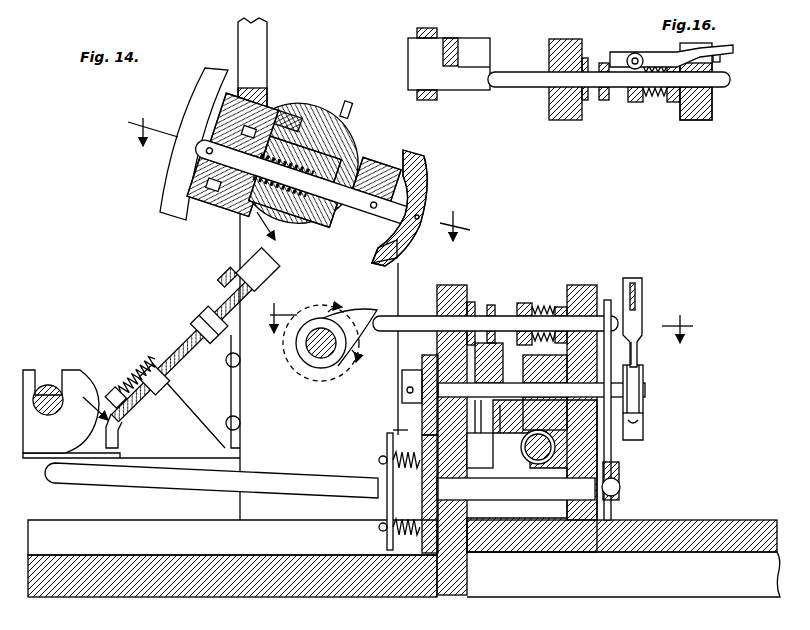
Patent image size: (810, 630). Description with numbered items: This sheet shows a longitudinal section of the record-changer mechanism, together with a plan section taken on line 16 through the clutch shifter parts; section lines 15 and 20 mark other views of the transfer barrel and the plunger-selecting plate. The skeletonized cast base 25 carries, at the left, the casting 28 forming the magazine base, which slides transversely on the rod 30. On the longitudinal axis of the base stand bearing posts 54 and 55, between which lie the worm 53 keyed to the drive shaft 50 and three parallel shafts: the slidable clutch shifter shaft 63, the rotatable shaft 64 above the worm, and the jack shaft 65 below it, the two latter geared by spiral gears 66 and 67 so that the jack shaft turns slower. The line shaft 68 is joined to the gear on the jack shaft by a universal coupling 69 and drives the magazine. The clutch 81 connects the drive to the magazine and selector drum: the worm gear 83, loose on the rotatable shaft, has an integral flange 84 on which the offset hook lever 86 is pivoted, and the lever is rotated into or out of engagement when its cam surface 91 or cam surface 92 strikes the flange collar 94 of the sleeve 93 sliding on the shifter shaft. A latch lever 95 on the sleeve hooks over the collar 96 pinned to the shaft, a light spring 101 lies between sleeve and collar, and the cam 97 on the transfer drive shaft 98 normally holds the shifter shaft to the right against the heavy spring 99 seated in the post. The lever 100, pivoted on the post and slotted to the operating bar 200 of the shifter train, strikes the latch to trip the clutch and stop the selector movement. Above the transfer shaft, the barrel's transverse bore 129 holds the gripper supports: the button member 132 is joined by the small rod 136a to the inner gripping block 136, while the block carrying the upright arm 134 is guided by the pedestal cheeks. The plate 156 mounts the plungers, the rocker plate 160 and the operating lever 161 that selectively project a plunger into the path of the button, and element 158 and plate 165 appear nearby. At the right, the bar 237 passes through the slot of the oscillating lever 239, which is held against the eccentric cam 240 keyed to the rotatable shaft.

In FIG. 14, the section line 15 is at (300, 172).
In FIG. 14, the section line 16 is at (485, 323).
In FIG. 14, the section line 20 is at (165, 315).
In FIG. 14, the base 25 is at (243, 597).
In FIG. 14, the casting 28 is at (78, 371).
In FIG. 14, the rod 30 is at (46, 385).
In FIG. 14, the drive shaft 50 is at (532, 476).
In FIG. 14, the worm 53 is at (540, 462).
In FIG. 14, the bearing post 54 is at (590, 285).
In FIG. 16, the bearing post 54 is at (710, 120).
In FIG. 14, the bearing post 55 is at (460, 285).
In FIG. 16, the bearing post 55 is at (567, 40).
In FIG. 14, the clutch shifter shaft 63 is at (411, 316).
In FIG. 16, the clutch shifter shaft 63 is at (514, 72).
In FIG. 14, the rotatable shaft 64 is at (422, 413).
In FIG. 14, the selector and magazine drive jack shaft 65 is at (505, 490).
In FIG. 14, the spiral gear 66 is at (422, 545).
In FIG. 14, the spiral gear 67 is at (412, 370).
In FIG. 14, the line shaft 68 is at (296, 477).
In FIG. 14, the universal coupling 69 is at (387, 545).
In FIG. 14, the clutch 81 is at (510, 272).
In FIG. 14, the worm gear 83 is at (600, 427).
In FIG. 14, the flange 84 is at (421, 425).
In FIG. 14, the hook lever 86 is at (482, 432).
In FIG. 14, the cam surface 91 is at (476, 356).
In FIG. 14, the cam surface 92 is at (472, 433).
In FIG. 14, the sleeve 93 is at (524, 303).
In FIG. 16, the sleeve 93 is at (635, 102).
In FIG. 14, the flange collar 94 is at (491, 305).
In FIG. 16, the flange collar 94 is at (604, 100).
In FIG. 16, the latch lever 95 is at (662, 52).
In FIG. 14, the collar 96 is at (561, 325).
In FIG. 16, the collar 96 is at (674, 102).
In FIG. 14, the cam 97 is at (377, 310).
In FIG. 16, the cam 97 is at (476, 90).
In FIG. 14, the transfer drive shaft 98 is at (318, 360).
In FIG. 16, the transfer drive shaft 98 is at (443, 32).
In FIG. 14, the spring 99 is at (580, 290).
In FIG. 16, the spring 99 is at (708, 100).
In FIG. 14, the lever 100 is at (636, 330).
In FIG. 14, the spring 101 is at (542, 305).
In FIG. 16, the spring 101 is at (652, 100).
In FIG. 14, the transverse bore 129 is at (270, 125).
In FIG. 14, the button member 132 is at (428, 168).
In FIG. 14, the arm 134 is at (262, 47).
In FIG. 14, the inner record gripping block 136 is at (166, 197).
In FIG. 14, the rod 136a is at (418, 212).
In FIG. 14, the plate 156 is at (203, 360).
In FIG. 14, the wedge 158 is at (398, 258).
In FIG. 16, the rocker plate 160 is at (722, 56).
In FIG. 14, the operating lever 161 is at (119, 446).
In FIG. 14, the plate 165 is at (125, 458).
In FIG. 14, the operating bar 200 is at (620, 476).
In FIG. 14, the bar 237 is at (643, 285).
In FIG. 14, the oscillating lever 239 is at (640, 353).
In FIG. 14, the eccentric cam 240 is at (640, 379).